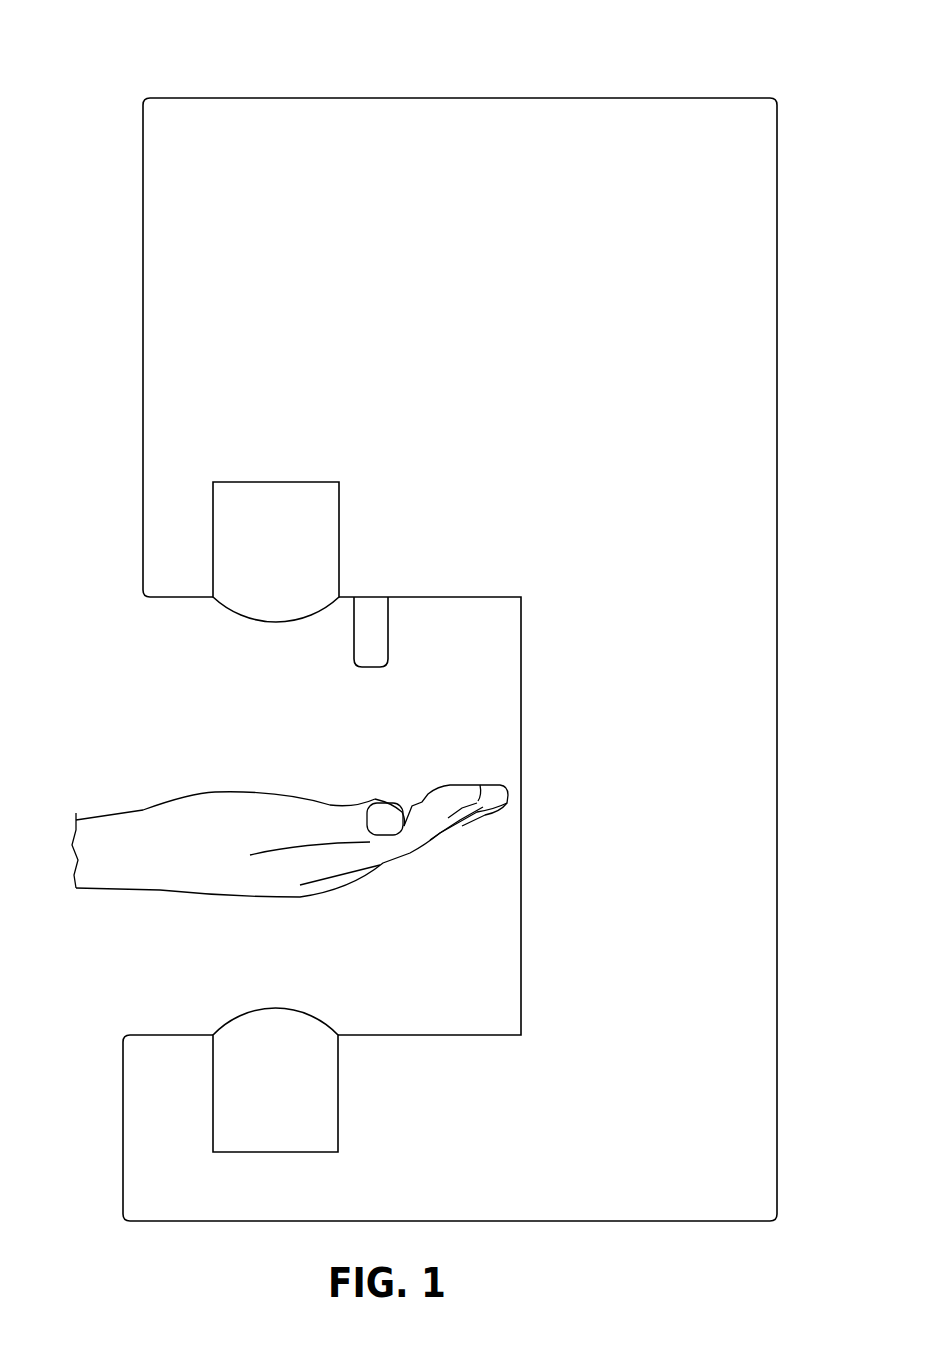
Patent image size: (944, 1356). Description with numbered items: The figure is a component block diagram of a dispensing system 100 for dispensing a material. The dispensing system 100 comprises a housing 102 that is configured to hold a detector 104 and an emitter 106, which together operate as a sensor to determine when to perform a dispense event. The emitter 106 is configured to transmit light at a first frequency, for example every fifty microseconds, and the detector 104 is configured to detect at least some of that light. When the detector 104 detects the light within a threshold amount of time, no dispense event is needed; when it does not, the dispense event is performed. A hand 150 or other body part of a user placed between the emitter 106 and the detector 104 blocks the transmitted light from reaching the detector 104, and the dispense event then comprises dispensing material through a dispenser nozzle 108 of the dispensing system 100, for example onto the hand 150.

The dispensing system 100 is at (128, 41).
The housing 102 is at (523, 97).
The detector 104 is at (227, 1017).
The emitter 106 is at (237, 618).
The dispenser nozzle 108 is at (368, 668).
The hand 150 is at (103, 888).